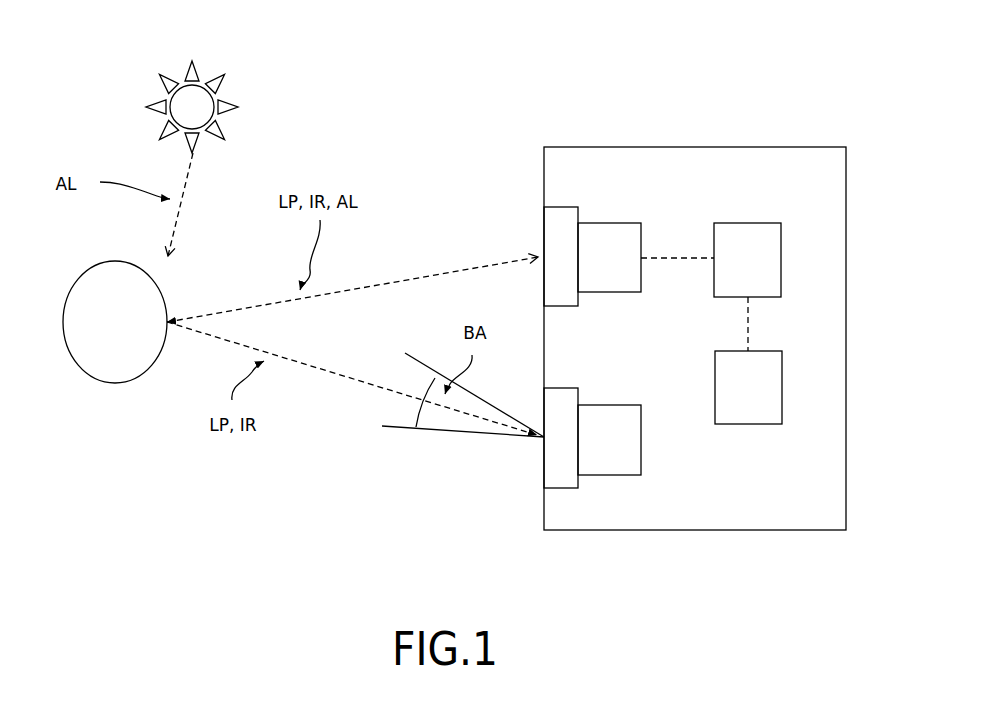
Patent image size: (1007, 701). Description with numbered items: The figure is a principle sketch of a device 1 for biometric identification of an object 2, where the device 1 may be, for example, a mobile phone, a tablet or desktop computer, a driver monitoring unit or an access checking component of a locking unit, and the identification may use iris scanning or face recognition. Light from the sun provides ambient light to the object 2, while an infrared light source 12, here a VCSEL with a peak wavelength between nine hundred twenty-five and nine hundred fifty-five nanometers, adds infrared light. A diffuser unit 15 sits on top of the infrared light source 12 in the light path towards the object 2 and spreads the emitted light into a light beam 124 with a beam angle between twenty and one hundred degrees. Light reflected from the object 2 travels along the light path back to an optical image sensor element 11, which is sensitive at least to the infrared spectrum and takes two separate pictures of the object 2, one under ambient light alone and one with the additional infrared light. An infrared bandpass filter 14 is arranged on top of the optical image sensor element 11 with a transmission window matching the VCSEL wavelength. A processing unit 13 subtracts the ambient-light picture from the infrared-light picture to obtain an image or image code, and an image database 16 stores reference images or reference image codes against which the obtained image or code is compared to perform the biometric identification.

The device 1 is at (694, 145).
The object 2 is at (115, 322).
The optical image sensor element 11 is at (609, 257).
The infrared light source 12 is at (609, 440).
The processing unit 13 is at (747, 260).
The infrared bandpass filter 14 is at (562, 258).
The diffuser unit 15 is at (563, 464).
The image database 16 is at (748, 387).
The light beam 124 is at (464, 439).